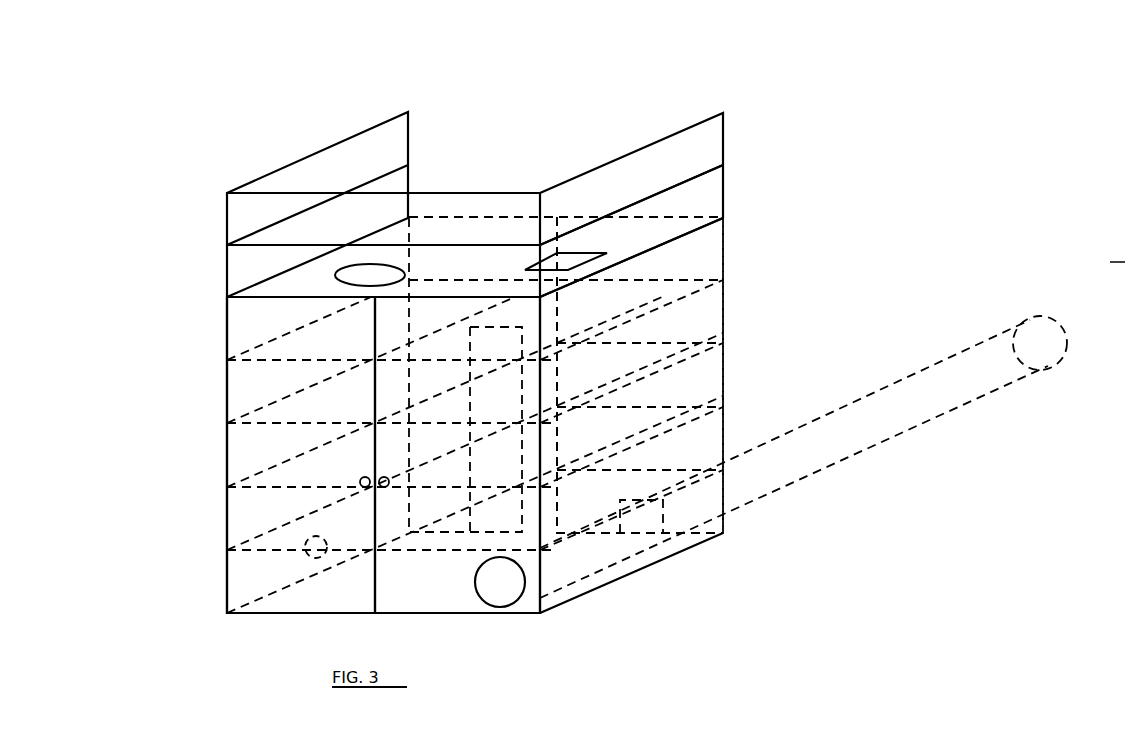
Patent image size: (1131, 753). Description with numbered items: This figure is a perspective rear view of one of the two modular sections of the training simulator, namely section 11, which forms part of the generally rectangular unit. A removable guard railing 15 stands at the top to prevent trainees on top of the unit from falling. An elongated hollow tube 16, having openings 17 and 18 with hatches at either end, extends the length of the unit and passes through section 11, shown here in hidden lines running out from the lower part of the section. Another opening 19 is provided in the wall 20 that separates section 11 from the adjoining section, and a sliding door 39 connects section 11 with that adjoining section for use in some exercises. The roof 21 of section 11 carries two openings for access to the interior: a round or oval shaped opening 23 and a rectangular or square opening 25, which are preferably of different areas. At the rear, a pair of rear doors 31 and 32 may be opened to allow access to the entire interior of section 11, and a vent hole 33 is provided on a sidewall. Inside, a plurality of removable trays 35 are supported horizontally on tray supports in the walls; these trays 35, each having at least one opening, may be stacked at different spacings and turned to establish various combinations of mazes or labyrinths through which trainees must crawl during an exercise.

The section 11 is at (325, 93).
The removable guard railing 15 is at (723, 148).
The elongated hollow tube 16 is at (852, 433).
The opening 17 is at (508, 580).
The opening 18 is at (1050, 342).
The opening 19 is at (650, 525).
The wall 20 is at (705, 317).
The roof 21 is at (648, 227).
The round or oval shaped opening 23 is at (380, 270).
The rectangular or square opening 25 is at (570, 257).
The rear door 31 is at (338, 587).
The rear door 32 is at (402, 588).
The vent hole 33 is at (312, 542).
The removable tray 35 is at (672, 367).
The sliding door 39 is at (483, 340).